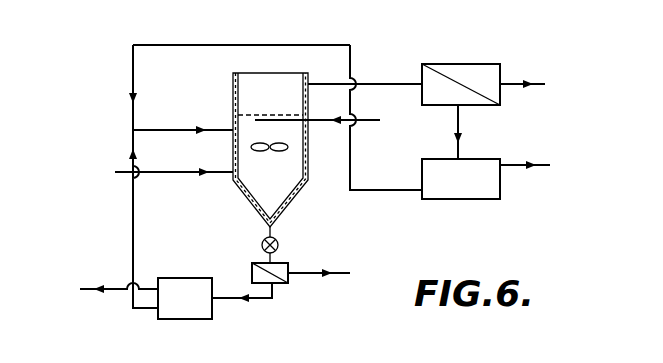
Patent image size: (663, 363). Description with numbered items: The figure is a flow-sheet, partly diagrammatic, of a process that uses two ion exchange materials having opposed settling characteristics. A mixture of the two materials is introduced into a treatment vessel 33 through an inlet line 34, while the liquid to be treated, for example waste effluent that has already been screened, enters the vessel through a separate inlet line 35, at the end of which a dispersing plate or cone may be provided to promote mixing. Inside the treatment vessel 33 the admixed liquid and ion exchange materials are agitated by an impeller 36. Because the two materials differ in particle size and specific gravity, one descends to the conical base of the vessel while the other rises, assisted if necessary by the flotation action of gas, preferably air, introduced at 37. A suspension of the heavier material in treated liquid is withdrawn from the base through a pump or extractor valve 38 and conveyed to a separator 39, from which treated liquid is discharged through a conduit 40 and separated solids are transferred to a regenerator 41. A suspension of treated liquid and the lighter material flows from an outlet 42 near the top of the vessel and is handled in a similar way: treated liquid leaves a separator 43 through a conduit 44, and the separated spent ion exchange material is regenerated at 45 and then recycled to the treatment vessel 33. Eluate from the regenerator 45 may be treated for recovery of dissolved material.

The treatment vessel 33 is at (290, 203).
The inlet line 34 is at (226, 130).
The inlet line 35 is at (228, 176).
The impeller 36 is at (256, 150).
The gas introduction point 37 is at (320, 118).
The extractor valve 38 is at (279, 244).
The separator 39 is at (288, 281).
The conduit 40 is at (350, 273).
The regenerator 41 is at (200, 278).
The outlet 42 is at (328, 86).
The separator 43 is at (472, 64).
The conduit 44 is at (545, 84).
The regenerator 45 is at (453, 199).